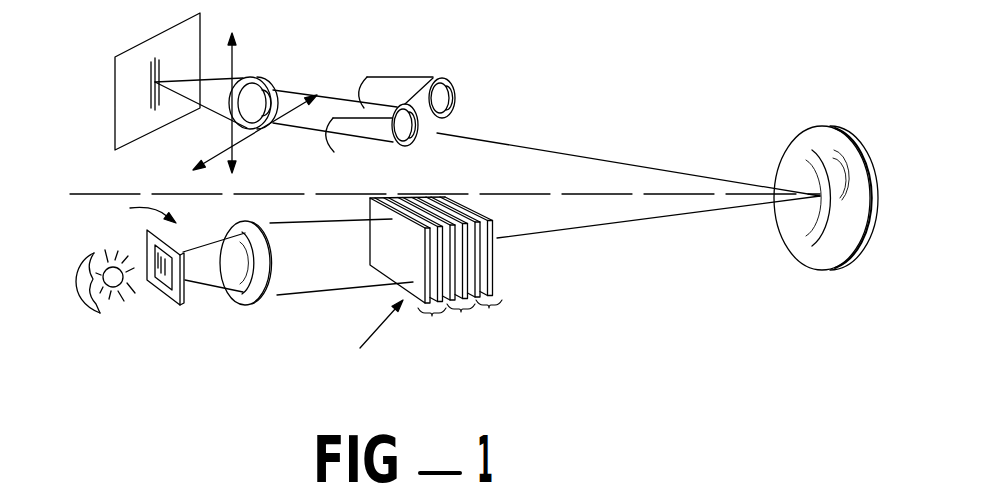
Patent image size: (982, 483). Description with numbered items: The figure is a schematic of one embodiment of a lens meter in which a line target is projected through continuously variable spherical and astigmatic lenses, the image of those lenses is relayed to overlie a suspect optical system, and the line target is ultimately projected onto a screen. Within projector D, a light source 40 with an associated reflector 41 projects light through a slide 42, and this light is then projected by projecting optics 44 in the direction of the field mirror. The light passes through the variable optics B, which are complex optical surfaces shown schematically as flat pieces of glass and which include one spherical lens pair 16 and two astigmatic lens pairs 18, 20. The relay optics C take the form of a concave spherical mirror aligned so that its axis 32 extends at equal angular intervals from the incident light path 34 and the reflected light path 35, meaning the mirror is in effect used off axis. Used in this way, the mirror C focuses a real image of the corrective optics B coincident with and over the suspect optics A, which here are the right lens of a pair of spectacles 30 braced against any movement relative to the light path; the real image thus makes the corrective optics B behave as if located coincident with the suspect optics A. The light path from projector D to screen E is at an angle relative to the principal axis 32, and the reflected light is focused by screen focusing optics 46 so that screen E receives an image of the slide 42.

The screen E is at (201, 29).
The screen focusing optics 46 is at (263, 78).
The suspect optics A is at (405, 103).
The pair of spectacles 30 is at (448, 78).
The reflected light path 35 is at (565, 150).
The incident light path 34 is at (615, 225).
The axis 32 is at (633, 193).
The relay optics C is at (835, 125).
The projector D is at (140, 209).
The reflector 41 is at (92, 308).
The light source 40 is at (122, 303).
The slide 42 is at (168, 302).
The projecting optics 44 is at (257, 303).
The variable optics B is at (444, 293).
The spherical lens pair 16 is at (437, 317).
The astigmatic lens pair 18 is at (463, 317).
The astigmatic lens pair 20 is at (490, 315).